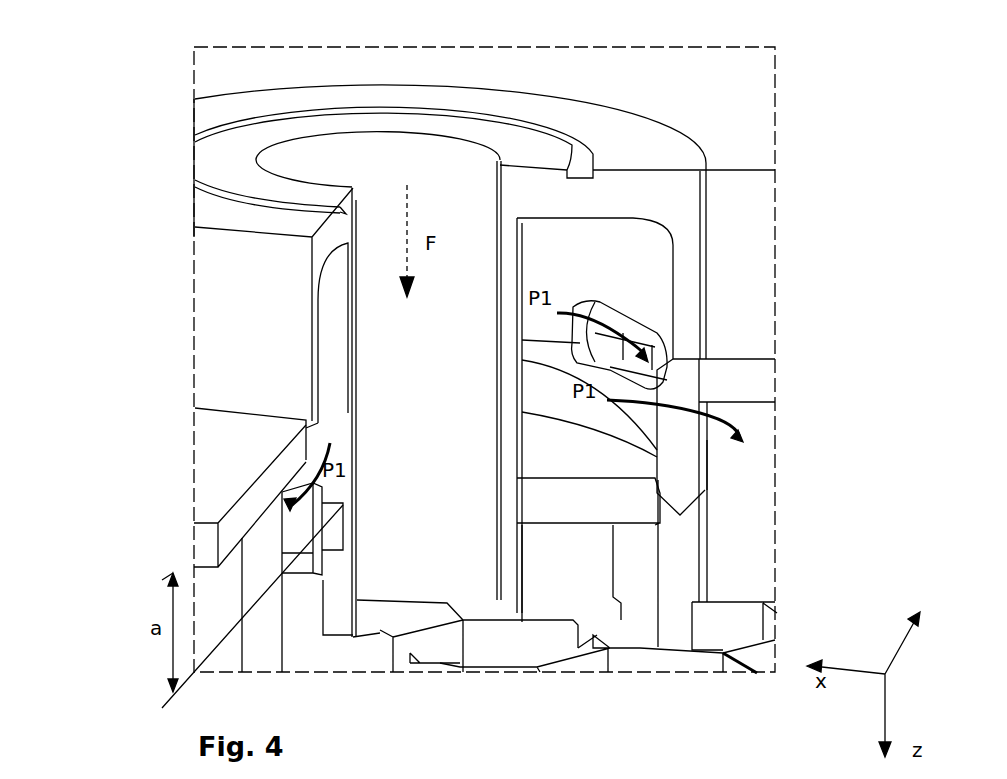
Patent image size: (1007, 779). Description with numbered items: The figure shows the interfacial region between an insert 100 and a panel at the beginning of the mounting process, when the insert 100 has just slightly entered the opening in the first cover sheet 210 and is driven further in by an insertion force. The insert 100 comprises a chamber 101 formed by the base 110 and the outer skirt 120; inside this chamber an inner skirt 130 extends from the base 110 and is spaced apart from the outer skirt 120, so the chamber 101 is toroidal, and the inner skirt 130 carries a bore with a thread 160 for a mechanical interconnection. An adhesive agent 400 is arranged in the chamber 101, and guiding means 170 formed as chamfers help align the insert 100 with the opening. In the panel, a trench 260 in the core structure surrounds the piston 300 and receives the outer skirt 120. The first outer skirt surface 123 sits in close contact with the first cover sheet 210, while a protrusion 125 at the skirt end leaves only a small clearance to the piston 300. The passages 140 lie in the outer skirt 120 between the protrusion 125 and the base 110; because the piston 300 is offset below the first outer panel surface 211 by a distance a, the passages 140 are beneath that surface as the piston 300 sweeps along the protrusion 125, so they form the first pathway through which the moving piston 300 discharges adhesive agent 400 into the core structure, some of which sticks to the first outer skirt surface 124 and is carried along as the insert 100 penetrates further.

The insert 100 is at (682, 120).
The base 110 is at (622, 200).
The chamber 101 is at (580, 263).
The outer skirt 120 is at (688, 275).
The first outer skirt surface 123 is at (675, 352).
The first outer skirt surface 124 is at (707, 300).
The protrusion 125 is at (578, 158).
The inner skirt 130 is at (512, 576).
The passages 140 is at (615, 320).
The thread 160 is at (380, 370).
The guiding means 170 is at (305, 563).
The first cover sheet 210 is at (246, 516).
The first outer panel surface 211 is at (243, 468).
The trench 260 is at (682, 630).
The piston 300 is at (338, 548).
The adhesive agent 400 is at (577, 446).